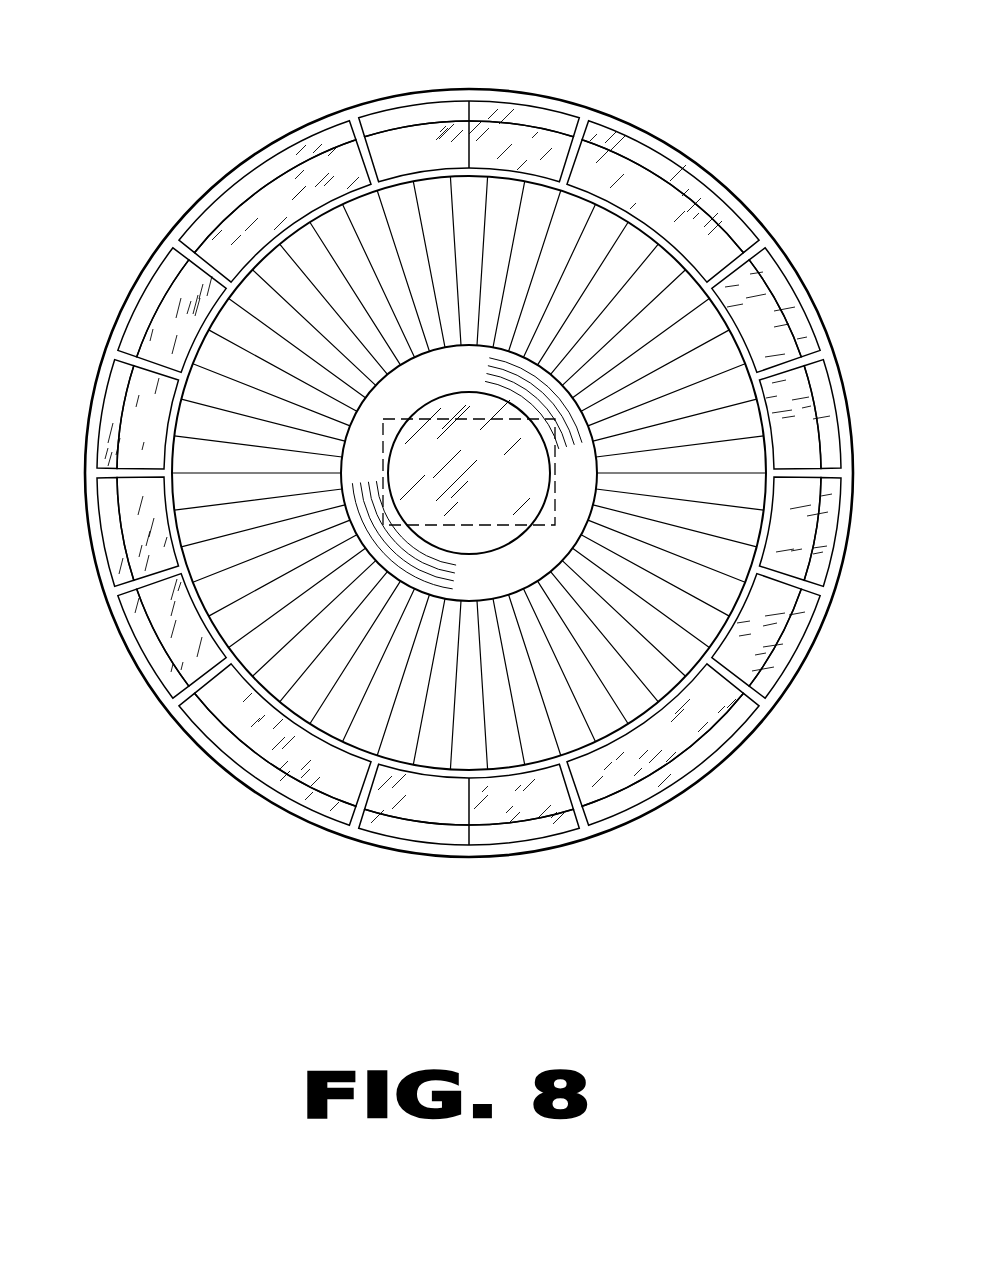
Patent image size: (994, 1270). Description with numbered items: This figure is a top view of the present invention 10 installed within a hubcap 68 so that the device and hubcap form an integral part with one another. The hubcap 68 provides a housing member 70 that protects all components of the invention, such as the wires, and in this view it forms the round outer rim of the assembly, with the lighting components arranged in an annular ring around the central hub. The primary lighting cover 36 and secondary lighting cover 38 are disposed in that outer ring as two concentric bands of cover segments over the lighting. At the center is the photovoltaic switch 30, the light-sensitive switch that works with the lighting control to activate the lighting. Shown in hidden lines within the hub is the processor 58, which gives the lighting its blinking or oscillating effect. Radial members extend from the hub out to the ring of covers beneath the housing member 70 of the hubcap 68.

The present invention 10 is at (454, 428).
The photovoltaic switch 30 is at (413, 407).
The primary lighting cover 36 is at (130, 481).
The secondary lighting cover 38 is at (135, 330).
The processor 58 is at (502, 420).
The hubcap 68 is at (470, 230).
The housing member 70 is at (97, 562).